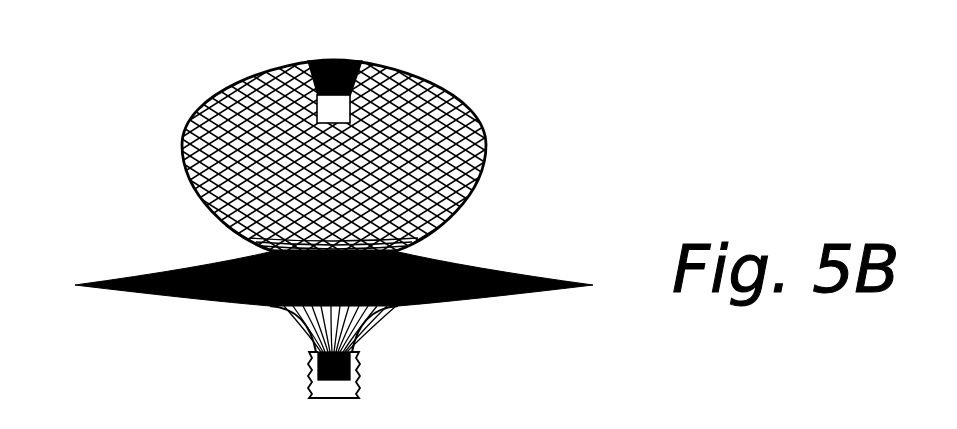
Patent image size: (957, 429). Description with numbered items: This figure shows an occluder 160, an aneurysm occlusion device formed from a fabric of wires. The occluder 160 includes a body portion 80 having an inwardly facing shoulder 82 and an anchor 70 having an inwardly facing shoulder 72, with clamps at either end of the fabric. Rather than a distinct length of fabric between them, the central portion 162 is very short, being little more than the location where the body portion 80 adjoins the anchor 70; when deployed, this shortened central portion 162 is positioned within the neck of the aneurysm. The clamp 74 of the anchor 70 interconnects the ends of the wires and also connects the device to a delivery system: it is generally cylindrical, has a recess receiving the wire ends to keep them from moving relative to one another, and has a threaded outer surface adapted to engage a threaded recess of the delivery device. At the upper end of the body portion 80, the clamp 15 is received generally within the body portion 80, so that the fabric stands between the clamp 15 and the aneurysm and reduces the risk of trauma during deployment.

The occluder 160 is at (141, 143).
The body portion 80 is at (456, 150).
The shoulder 82 is at (236, 228).
The clamp 15 is at (330, 108).
The central portion 162 is at (400, 253).
The anchor 70 is at (505, 302).
The shoulder 72 is at (523, 277).
The clamp 74 is at (338, 389).